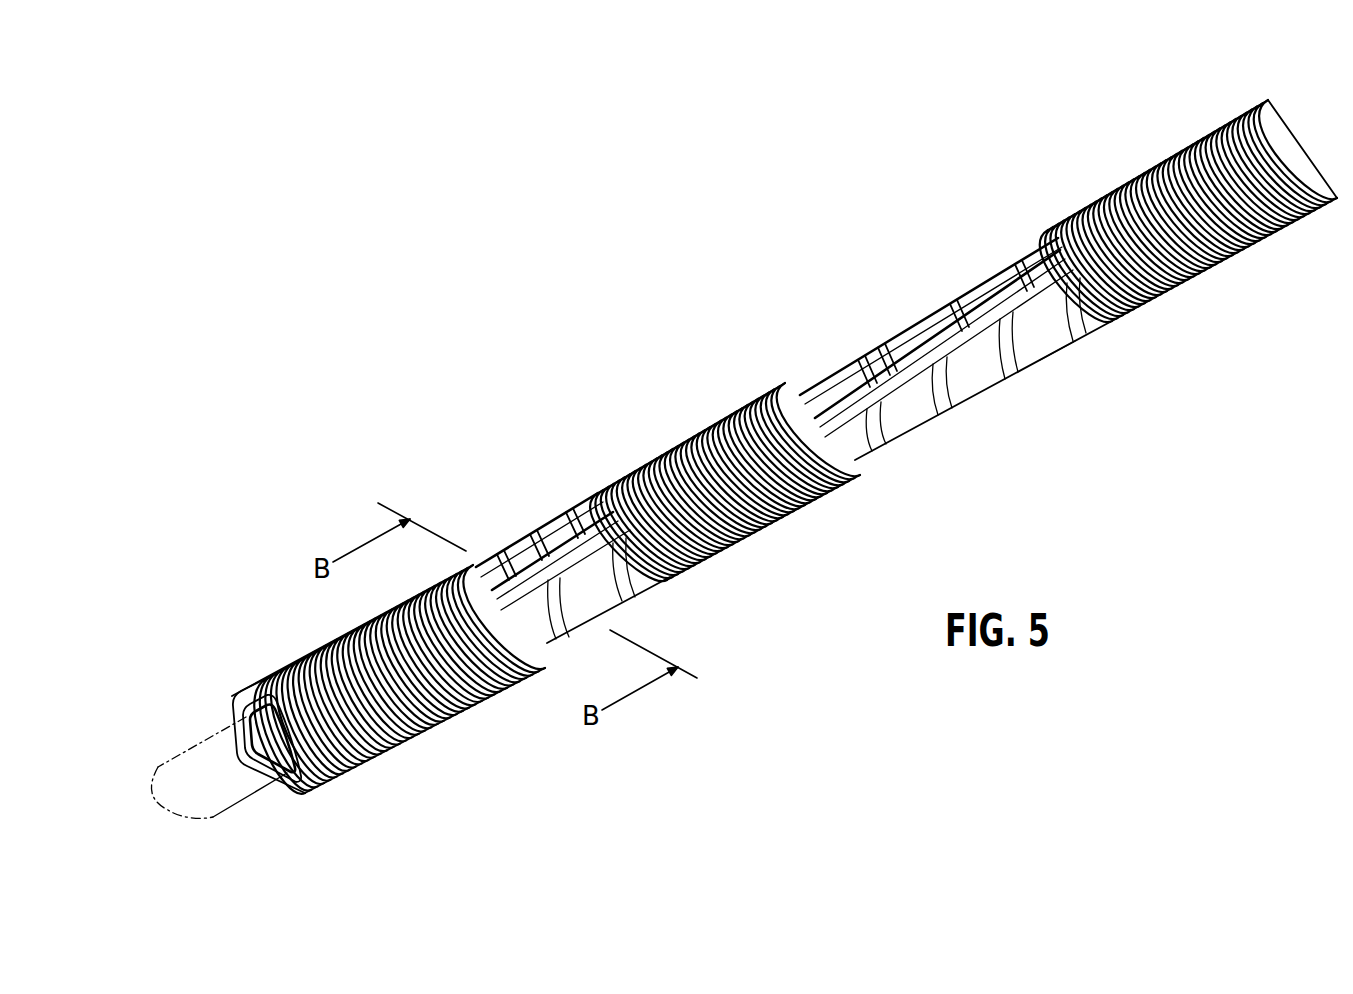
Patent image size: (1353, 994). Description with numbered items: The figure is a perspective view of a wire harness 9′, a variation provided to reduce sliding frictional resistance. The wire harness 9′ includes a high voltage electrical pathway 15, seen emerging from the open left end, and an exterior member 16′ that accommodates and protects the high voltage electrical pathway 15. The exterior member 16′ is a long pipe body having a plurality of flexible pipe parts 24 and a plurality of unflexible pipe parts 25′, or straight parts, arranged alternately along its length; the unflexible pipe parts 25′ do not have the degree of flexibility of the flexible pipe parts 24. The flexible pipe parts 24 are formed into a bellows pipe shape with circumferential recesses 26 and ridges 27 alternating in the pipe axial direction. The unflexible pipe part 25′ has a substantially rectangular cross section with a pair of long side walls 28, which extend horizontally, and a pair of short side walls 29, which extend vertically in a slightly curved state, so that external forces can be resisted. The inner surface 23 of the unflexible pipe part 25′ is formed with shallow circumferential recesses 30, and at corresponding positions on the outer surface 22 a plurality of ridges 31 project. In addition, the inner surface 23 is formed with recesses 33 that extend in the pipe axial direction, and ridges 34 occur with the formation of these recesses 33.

The wire harness 9′ is at (532, 338).
The high voltage electrical pathway 15 is at (254, 778).
The exterior member 16′ is at (664, 452).
The outer surface 22 is at (1087, 307).
The inner surface 23 is at (1057, 335).
The flexible pipe parts 24 is at (264, 688).
The unflexible pipe parts 25′ is at (533, 522).
The recesses 26 is at (468, 703).
The ridges 27 is at (460, 705).
The long side walls 28 is at (862, 375).
The short side walls 29 is at (905, 425).
The recesses 30 is at (652, 593).
The ridges 31 is at (645, 597).
The recesses 33 is at (585, 557).
The ridges 34 is at (556, 548).